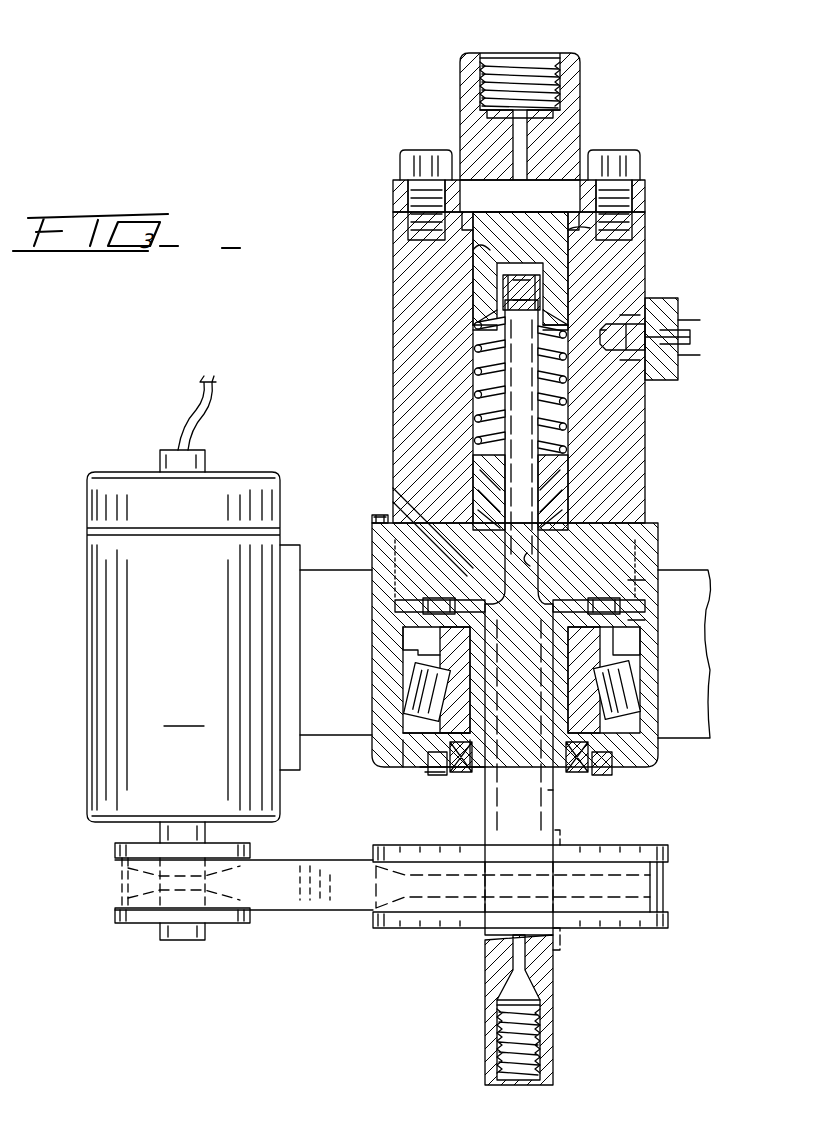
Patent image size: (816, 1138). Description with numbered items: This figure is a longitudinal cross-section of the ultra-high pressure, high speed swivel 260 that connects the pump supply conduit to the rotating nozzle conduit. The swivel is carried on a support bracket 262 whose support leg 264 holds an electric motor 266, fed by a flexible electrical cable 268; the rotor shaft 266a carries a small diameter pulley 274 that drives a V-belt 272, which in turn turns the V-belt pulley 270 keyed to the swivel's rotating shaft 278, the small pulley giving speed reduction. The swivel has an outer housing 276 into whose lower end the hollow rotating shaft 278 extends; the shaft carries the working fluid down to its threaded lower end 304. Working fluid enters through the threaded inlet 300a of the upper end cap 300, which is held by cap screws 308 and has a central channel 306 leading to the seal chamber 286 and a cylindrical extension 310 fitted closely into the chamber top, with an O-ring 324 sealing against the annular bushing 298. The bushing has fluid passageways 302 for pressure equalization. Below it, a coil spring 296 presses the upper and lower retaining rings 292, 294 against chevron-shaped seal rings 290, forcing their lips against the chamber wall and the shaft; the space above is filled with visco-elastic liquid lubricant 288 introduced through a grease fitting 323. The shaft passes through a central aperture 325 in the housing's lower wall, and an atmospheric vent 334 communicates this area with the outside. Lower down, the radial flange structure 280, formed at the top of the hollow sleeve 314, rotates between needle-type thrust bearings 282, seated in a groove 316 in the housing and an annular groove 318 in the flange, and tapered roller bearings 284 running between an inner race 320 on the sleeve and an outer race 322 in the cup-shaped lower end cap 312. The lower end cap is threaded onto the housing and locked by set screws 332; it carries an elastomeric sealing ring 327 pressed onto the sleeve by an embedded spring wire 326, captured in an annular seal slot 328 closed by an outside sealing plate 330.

The high pressure swivel 260 is at (658, 466).
The support bracket 262 is at (690, 740).
The support leg 264 is at (332, 736).
The electric motor 266 is at (183, 636).
The rotor shaft 266a is at (192, 942).
The electrical cable 268 is at (200, 398).
The V-belt pulley 270 is at (398, 926).
The V-belt 272 is at (274, 892).
The small diameter pulley 274 is at (128, 924).
The outer housing 276 is at (390, 340).
The rotating shaft 278 is at (548, 794).
The radial flange structure 280 is at (636, 610).
The needle-type thrust bearings 282 is at (598, 606).
The tapered roller bearings 284 is at (615, 694).
The seal chamber 286 is at (480, 452).
The liquid lubricant 288 is at (478, 382).
The seal rings 290 is at (552, 476).
The upper retaining ring 292 is at (560, 438).
The lower retaining ring 294 is at (486, 470).
The coil spring 296 is at (478, 392).
The annular bushing 298 is at (474, 286).
The upper end cap 300 is at (393, 186).
The threaded inlet 300a is at (492, 54).
The fluid passageways 302 is at (500, 304).
The threaded lower end 304 is at (500, 1032).
The central channel 306 is at (528, 118).
The cap screws 308 is at (422, 150).
The cylindrical extension 310 is at (590, 230).
The lower end cap 312 is at (650, 770).
The hollow sleeve 314 is at (552, 672).
The groove 316 is at (430, 604).
The annular groove 318 is at (422, 608).
The inner race 320 is at (410, 680).
The outer race 322 is at (400, 760).
The grease fitting 323 is at (665, 325).
The O-ring 324 is at (480, 250).
The central aperture 325 is at (532, 558).
The embedded spring wire 326 is at (476, 746).
The elastomeric sealing ring 327 is at (455, 776).
The annular seal slot 328 is at (440, 765).
The outside sealing plate 330 is at (582, 776).
The set screws 332 is at (372, 517).
The atmospheric vent 334 is at (465, 548).